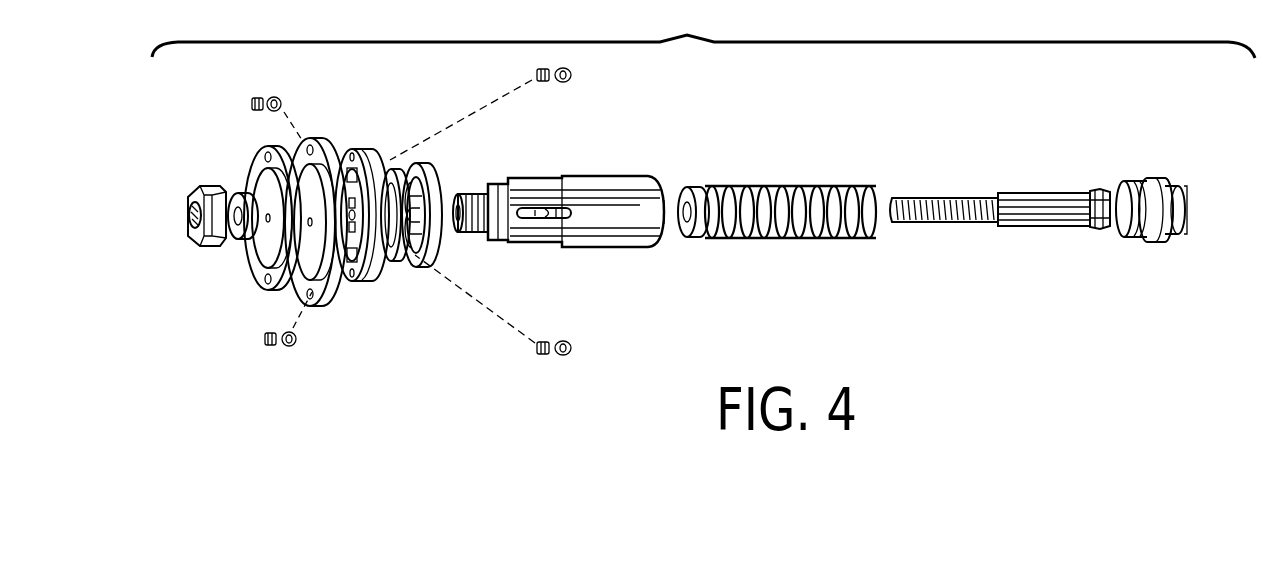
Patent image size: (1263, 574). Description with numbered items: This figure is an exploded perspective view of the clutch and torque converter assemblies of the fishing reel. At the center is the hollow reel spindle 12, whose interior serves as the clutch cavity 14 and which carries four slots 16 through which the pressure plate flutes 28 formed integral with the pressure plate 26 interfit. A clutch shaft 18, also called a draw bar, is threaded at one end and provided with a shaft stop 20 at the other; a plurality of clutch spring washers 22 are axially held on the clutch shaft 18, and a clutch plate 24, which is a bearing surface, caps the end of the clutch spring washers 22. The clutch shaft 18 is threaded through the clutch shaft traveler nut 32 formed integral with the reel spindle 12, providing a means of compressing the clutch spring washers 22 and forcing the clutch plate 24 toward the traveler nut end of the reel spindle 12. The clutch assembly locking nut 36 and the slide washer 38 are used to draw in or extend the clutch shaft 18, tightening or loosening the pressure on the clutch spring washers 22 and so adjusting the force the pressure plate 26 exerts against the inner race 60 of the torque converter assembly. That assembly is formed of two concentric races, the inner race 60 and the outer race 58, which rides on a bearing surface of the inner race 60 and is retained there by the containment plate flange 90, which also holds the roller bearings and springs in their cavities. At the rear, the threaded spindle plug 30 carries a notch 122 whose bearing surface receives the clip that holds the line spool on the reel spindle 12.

The reel spindle 12 is at (576, 213).
The clutch cavity 14 is at (672, 190).
The slots 16 is at (497, 186).
The clutch shaft 18 is at (953, 198).
The shaft stop 20 is at (1100, 229).
The clutch spring washers 22 is at (867, 243).
The clutch plate 24 is at (688, 240).
The pressure plate 26 is at (423, 277).
The pressure plate flutes 28 is at (447, 172).
The threaded spindle plug 30 is at (1189, 171).
The clutch shaft traveler nut 32 is at (463, 197).
The clutch assembly locking nut 36 is at (200, 247).
The slide washer 38 is at (238, 195).
The outer race 58 is at (318, 310).
The inner race 60 is at (370, 287).
The containment plate flange 90 is at (259, 283).
The notch 122 is at (1176, 182).